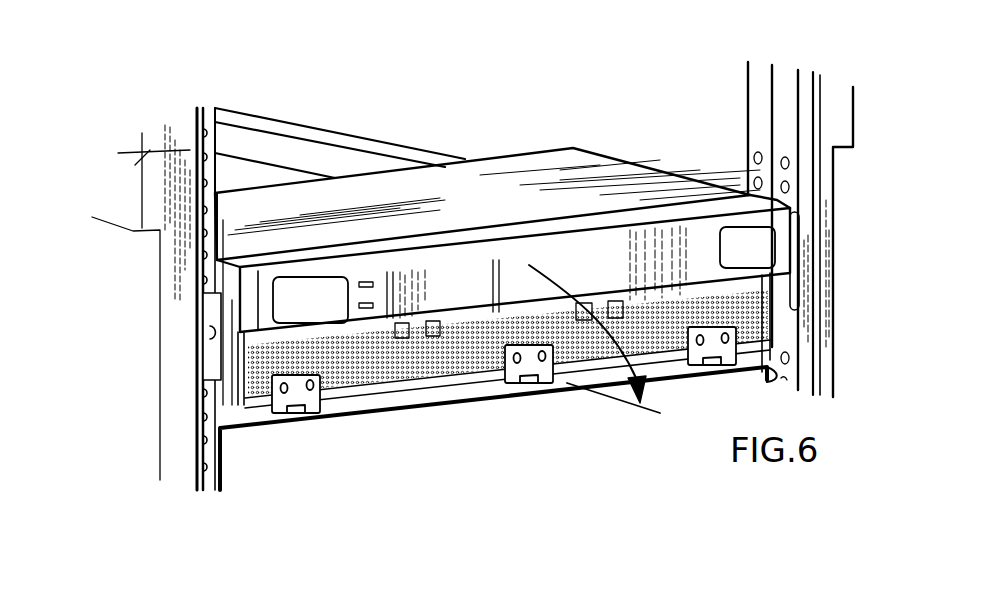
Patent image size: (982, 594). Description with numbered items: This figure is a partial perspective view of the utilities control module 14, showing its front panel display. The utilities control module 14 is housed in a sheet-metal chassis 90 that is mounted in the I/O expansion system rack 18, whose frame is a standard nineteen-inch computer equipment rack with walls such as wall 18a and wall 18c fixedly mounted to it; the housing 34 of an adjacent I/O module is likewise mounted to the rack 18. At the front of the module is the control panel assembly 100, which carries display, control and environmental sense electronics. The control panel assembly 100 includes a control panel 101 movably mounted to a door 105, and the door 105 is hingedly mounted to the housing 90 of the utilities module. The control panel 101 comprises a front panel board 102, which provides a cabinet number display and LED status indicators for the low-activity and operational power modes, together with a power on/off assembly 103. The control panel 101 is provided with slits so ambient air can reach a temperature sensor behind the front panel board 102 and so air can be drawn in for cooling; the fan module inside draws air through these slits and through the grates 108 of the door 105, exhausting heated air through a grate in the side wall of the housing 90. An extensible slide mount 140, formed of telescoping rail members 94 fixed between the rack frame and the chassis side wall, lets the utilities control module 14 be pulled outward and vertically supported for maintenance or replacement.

The utilities control module 14 is at (640, 167).
The frame 18 is at (748, 91).
The wall 18a is at (127, 170).
The wall 18c is at (800, 127).
The housing 34 is at (400, 412).
The sheet-metal chassis 90 is at (515, 163).
The rail member 94 is at (307, 177).
The control panel assembly 100 is at (503, 418).
The control panel 101 is at (467, 270).
The front panel board 102 is at (340, 287).
The power on/off assembly 103 is at (757, 247).
The door 105 is at (457, 330).
The grates 108 is at (357, 380).
The extensible slide mount 140 is at (318, 158).